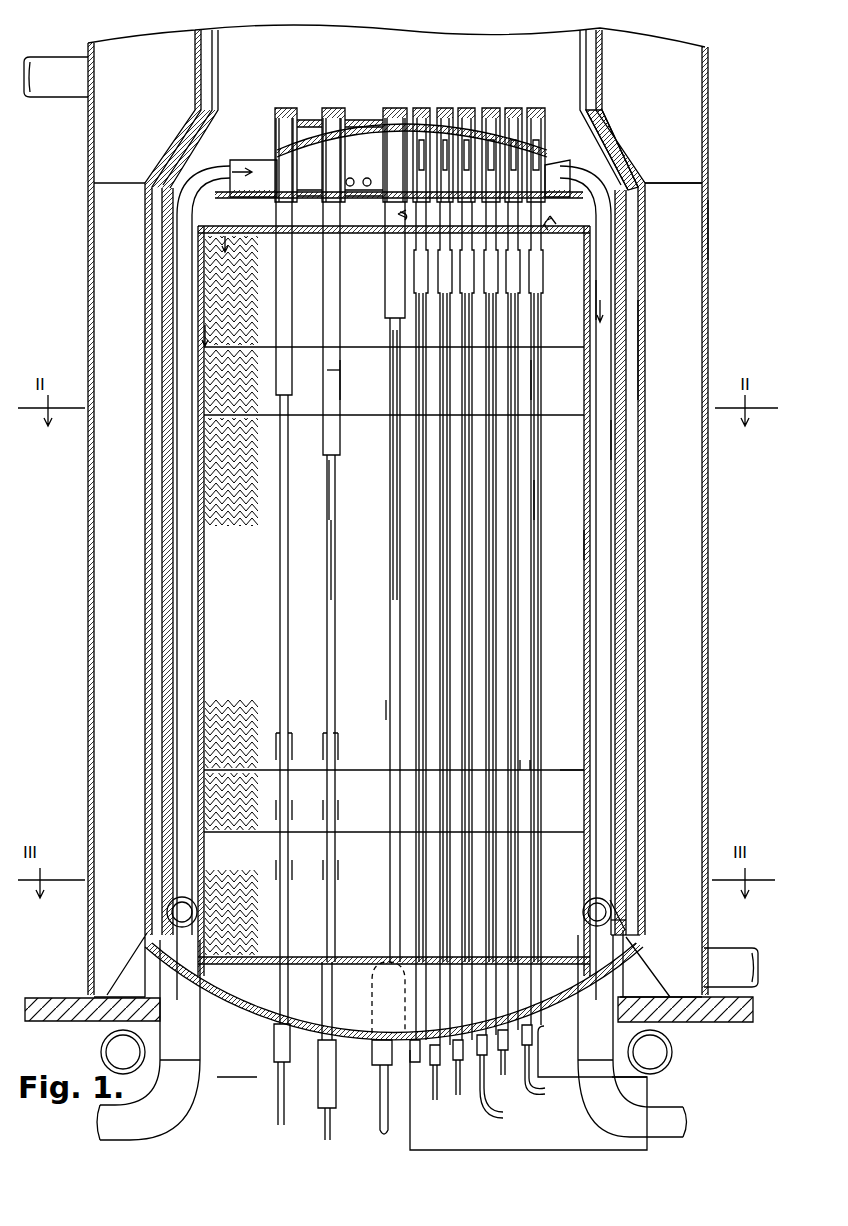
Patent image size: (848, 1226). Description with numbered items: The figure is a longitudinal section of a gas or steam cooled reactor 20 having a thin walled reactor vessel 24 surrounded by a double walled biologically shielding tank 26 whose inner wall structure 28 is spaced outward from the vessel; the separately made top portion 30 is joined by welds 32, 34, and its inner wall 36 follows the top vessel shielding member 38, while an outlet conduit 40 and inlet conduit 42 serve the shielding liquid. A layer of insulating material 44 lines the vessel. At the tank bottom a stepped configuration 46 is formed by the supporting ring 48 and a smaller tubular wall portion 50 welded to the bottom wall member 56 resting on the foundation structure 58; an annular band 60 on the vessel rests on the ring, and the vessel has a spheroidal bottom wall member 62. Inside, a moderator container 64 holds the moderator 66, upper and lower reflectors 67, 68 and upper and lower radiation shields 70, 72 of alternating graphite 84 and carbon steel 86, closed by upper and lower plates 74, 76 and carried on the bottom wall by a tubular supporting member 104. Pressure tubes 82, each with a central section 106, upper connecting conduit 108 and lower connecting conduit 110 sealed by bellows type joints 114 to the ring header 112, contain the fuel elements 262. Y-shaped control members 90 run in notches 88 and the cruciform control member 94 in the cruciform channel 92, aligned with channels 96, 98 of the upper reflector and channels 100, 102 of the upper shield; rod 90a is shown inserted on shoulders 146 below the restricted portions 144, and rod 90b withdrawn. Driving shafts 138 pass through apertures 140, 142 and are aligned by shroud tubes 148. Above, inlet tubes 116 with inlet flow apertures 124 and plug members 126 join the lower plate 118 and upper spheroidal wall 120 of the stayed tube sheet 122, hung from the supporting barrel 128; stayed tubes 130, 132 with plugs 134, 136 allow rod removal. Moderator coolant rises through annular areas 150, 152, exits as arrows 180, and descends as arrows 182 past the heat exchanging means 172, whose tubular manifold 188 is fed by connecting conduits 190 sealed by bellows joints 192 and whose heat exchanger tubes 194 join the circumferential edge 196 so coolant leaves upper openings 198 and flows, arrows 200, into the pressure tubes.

The reactor 20 is at (718, 238).
The reactor vessel 24 is at (628, 336).
The shielding tank 26 is at (650, 346).
The inner wall structure 28 is at (641, 447).
The top portion 30 is at (690, 108).
The sealing and structural weld 32 is at (648, 189).
The sealing and structural weld 34 is at (705, 184).
The inner wall 36 is at (600, 86).
The top vessel shielding member 38 is at (583, 70).
The outlet conduit 40 is at (746, 954).
The inlet conduit 42 is at (69, 99).
The insulating material 44 is at (600, 146).
The stepped configuration 46 is at (634, 935).
The supporting ring 48 is at (629, 921).
The tubular wall portion 50 is at (631, 960).
The bottom wall member 56 is at (78, 1016).
The foundation structure 58 is at (108, 1014).
The annular band 60 is at (626, 913).
The spheroidal bottom wall member 62 is at (358, 1046).
The moderator container 64 is at (585, 542).
The moderator 66 is at (548, 766).
The upper reflector 67 is at (571, 412).
The lower reflector 68 is at (568, 780).
The upper radiation shield 70 is at (600, 297).
The lower radiation shield 72 is at (552, 846).
The upper plate 74 is at (562, 235).
The lower plate 76 is at (301, 965).
The pressure tube 82 is at (535, 577).
The graphite layer 84 is at (263, 240).
The carbon steel layer 86 is at (253, 254).
The peripheral notch 88 is at (336, 535).
The Y-shaped control member 90 is at (336, 508).
The control rod in inserted position 90a is at (338, 483).
The control rod in withdrawn position 90b is at (278, 313).
The cruciform shaped channel 92 is at (390, 575).
The cruciform control member 94 is at (389, 438).
The Y-shaped control member channel 96 is at (338, 383).
The cruciform control member channel 98 is at (385, 386).
The control rod channel 100 is at (341, 265).
The control rod channel 102 is at (387, 283).
The tubular supporting member 104 is at (198, 976).
The central section 106 is at (536, 383).
The upper connecting conduit 108 is at (534, 276).
The lower connecting conduit 110 is at (518, 992).
The ring header 112 is at (672, 1062).
The bellows type joint 114 is at (500, 1066).
The inlet tube 116 is at (508, 130).
The lower plate 118 is at (399, 207).
The upper spheroidal wall 120 is at (365, 122).
The stayed tube sheet 122 is at (272, 128).
The inlet flow aperture 124 is at (480, 112).
The plug member 126 is at (434, 112).
The supporting barrel 128 is at (218, 148).
The stayed tube 130 is at (304, 122).
The stayed tube 132 is at (384, 121).
The plug member 134 is at (284, 111).
The plug member 136 is at (400, 108).
The control rod driving shaft 138 is at (275, 990).
The circular aperture 140 is at (276, 869).
The circular aperture 142 is at (276, 811).
The restricted portion 144 is at (276, 752).
The shoulder 146 is at (276, 734).
The shroud tube 148 is at (274, 1096).
The annular area 150 is at (535, 502).
The annular area 152 is at (386, 708).
The heat exchanging means 172 is at (122, 865).
The flow arrow 180 is at (400, 213).
The flow arrow 182 is at (196, 338).
The tubular manifold 188 is at (192, 955).
The connecting conduit 190 is at (371, 1005).
The bellows type joint 192 is at (198, 1040).
The heat exchanger tube 194 is at (168, 455).
The circumferential edge 196 is at (258, 158).
The upper opening 198 is at (240, 198).
The flow arrow 200 is at (563, 163).
The fuel element 262 is at (521, 760).